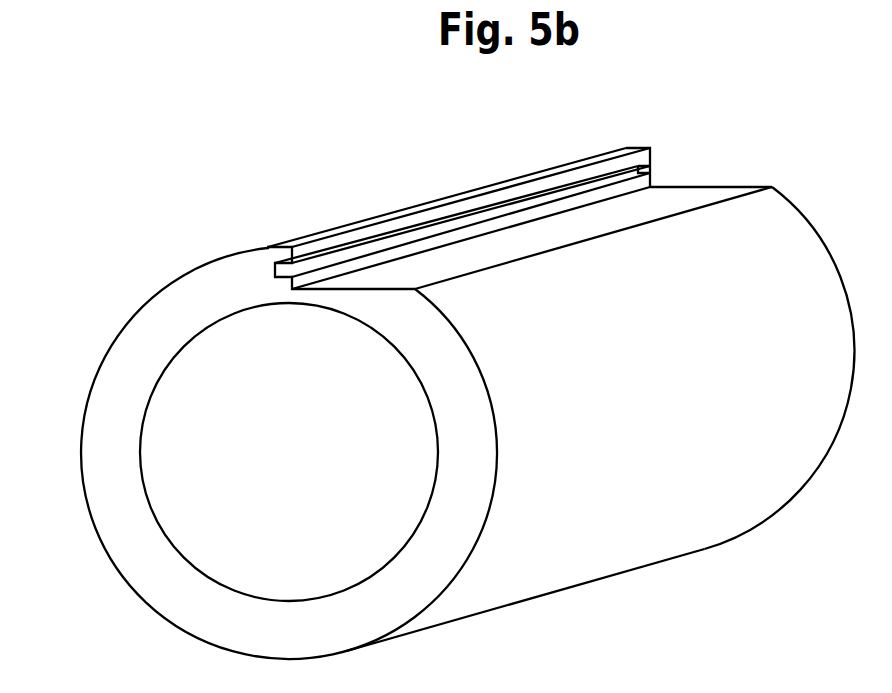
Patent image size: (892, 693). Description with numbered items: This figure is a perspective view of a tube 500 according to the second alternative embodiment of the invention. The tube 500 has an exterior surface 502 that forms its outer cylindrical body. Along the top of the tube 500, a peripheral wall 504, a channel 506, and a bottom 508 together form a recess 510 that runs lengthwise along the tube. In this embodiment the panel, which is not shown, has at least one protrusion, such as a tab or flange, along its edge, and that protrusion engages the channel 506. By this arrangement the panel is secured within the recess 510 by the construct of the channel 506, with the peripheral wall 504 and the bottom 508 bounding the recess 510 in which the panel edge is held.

The tube 500 is at (233, 215).
The exterior surface 502 is at (620, 535).
The peripheral wall 504 is at (640, 147).
The channel 506 is at (643, 169).
The bottom 508 is at (688, 181).
The recess 510 is at (555, 234).